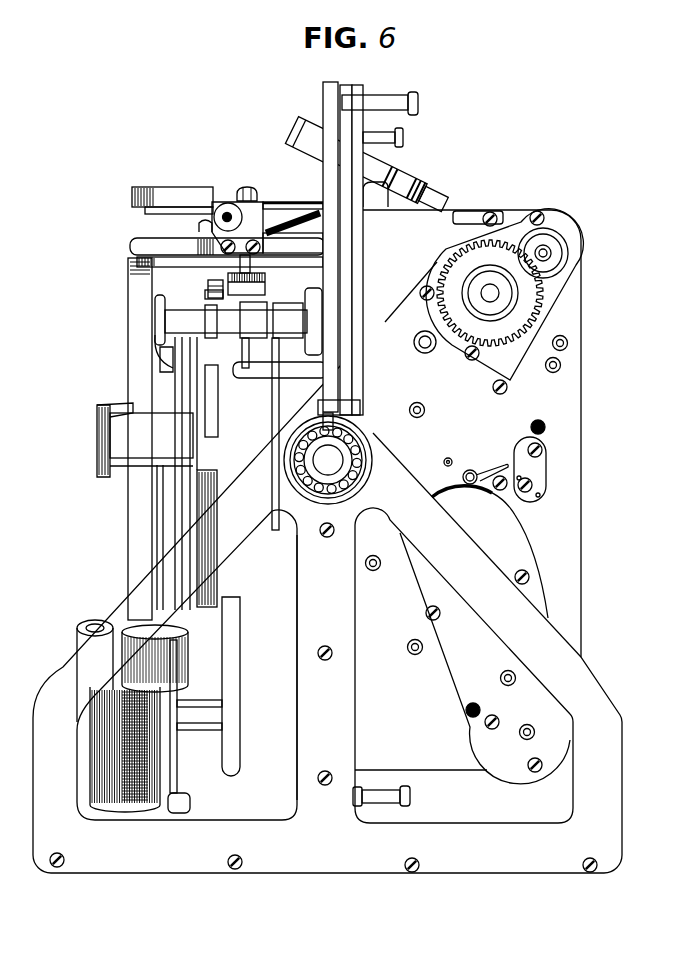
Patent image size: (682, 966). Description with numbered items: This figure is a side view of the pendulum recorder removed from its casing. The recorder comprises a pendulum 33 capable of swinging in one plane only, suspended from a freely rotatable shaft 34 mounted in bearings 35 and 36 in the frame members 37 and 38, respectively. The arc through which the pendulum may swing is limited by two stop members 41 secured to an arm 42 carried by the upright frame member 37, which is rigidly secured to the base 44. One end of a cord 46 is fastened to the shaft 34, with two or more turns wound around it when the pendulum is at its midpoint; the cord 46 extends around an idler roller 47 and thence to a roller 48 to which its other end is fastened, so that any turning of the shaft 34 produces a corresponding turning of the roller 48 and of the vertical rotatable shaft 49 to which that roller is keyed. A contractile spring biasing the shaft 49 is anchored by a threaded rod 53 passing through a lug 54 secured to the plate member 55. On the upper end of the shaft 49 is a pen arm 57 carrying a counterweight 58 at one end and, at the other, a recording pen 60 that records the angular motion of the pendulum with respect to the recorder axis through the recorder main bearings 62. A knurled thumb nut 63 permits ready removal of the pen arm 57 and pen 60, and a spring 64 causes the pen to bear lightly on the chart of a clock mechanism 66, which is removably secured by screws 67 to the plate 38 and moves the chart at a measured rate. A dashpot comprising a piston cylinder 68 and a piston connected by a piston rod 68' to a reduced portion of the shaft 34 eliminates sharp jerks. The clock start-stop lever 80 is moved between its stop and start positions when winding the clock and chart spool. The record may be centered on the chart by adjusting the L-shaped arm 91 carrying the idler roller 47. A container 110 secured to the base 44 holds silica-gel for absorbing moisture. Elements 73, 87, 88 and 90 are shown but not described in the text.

The pendulum 33 is at (197, 600).
The shaft 34 is at (166, 358).
The bearing 35 is at (157, 340).
The bearing 36 is at (312, 292).
The upright frame member 37 is at (128, 318).
The frame member 38 is at (323, 80).
The stop members 41 is at (208, 395).
The arm 42 is at (115, 405).
The base 44 is at (219, 703).
The cord 46 is at (205, 296).
The idler roller 47 is at (208, 284).
The roller 48 is at (262, 278).
The vertical rotatable shaft 49 is at (242, 352).
The threaded rod 53 is at (231, 211).
The lug 54 is at (225, 202).
The plate member 55 is at (132, 245).
The pen arm 57 is at (300, 202).
The counterweight 58 is at (138, 187).
The recording pen 60 is at (293, 113).
The recorder main bearings 62 is at (292, 482).
The knurled thumb nut 63 is at (258, 193).
The spring 64 is at (293, 229).
The clock mechanism 66 is at (582, 405).
The screws 67 is at (405, 136).
The piston cylinder 68 is at (307, 667).
The piston rod 68' is at (261, 434).
The pulley 73 is at (535, 253).
The clock start-stop lever 80 is at (502, 494).
The bracket 87 is at (462, 221).
The belt guard 88 is at (573, 228).
The tube 90 is at (393, 164).
The L-shaped arm 91 is at (199, 228).
The container 110 is at (85, 622).